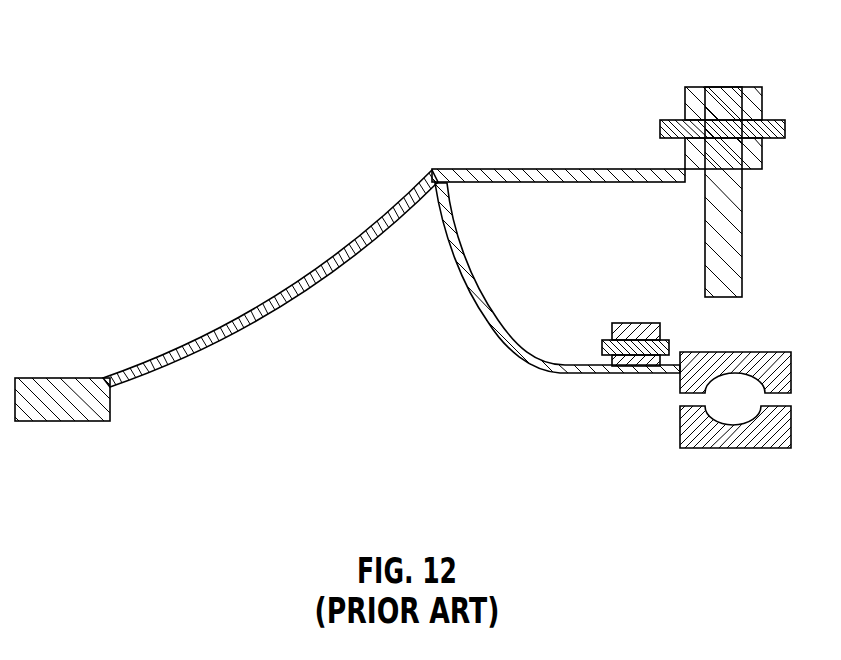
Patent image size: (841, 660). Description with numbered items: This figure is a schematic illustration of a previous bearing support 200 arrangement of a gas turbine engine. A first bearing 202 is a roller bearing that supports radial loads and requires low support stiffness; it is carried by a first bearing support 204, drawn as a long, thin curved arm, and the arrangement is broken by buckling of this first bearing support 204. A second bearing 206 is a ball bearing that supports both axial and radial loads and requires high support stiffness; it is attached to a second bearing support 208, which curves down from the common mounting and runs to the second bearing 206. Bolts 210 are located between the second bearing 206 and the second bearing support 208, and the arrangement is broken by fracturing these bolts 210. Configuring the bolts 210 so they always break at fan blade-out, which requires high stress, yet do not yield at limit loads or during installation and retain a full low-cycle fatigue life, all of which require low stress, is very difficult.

The bearing support 200 is at (106, 61).
The first bearing 202 is at (54, 423).
The first bearing support 204 is at (228, 330).
The second bearing 206 is at (702, 428).
The second bearing support 208 is at (490, 329).
The bolts 210 is at (600, 348).